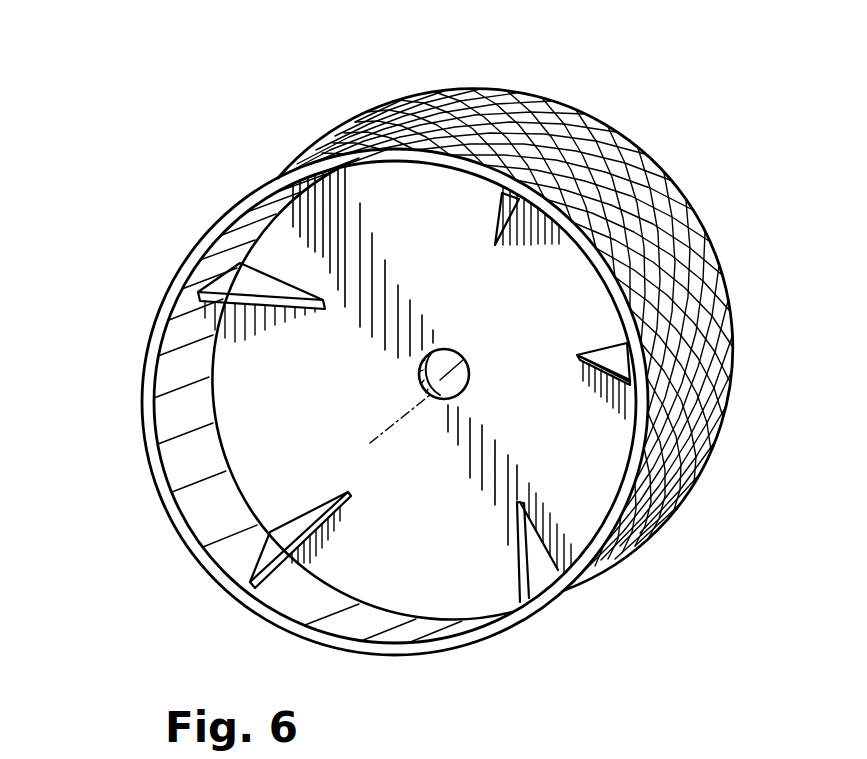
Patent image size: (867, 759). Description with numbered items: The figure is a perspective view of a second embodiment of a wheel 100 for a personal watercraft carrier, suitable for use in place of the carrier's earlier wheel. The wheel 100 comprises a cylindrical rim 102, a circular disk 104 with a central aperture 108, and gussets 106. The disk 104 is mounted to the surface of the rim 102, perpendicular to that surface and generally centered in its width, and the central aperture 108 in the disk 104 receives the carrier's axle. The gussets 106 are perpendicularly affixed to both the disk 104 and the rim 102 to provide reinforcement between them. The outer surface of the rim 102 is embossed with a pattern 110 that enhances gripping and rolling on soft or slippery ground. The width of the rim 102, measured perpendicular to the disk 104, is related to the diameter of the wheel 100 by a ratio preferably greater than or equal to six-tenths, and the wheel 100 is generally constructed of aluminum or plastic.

The wheel 100 is at (408, 49).
The cylindrical rim 102 is at (540, 97).
The circular disk 104 is at (247, 407).
The gussets 106 is at (268, 547).
The central aperture 108 is at (432, 396).
The pattern 110 is at (652, 188).